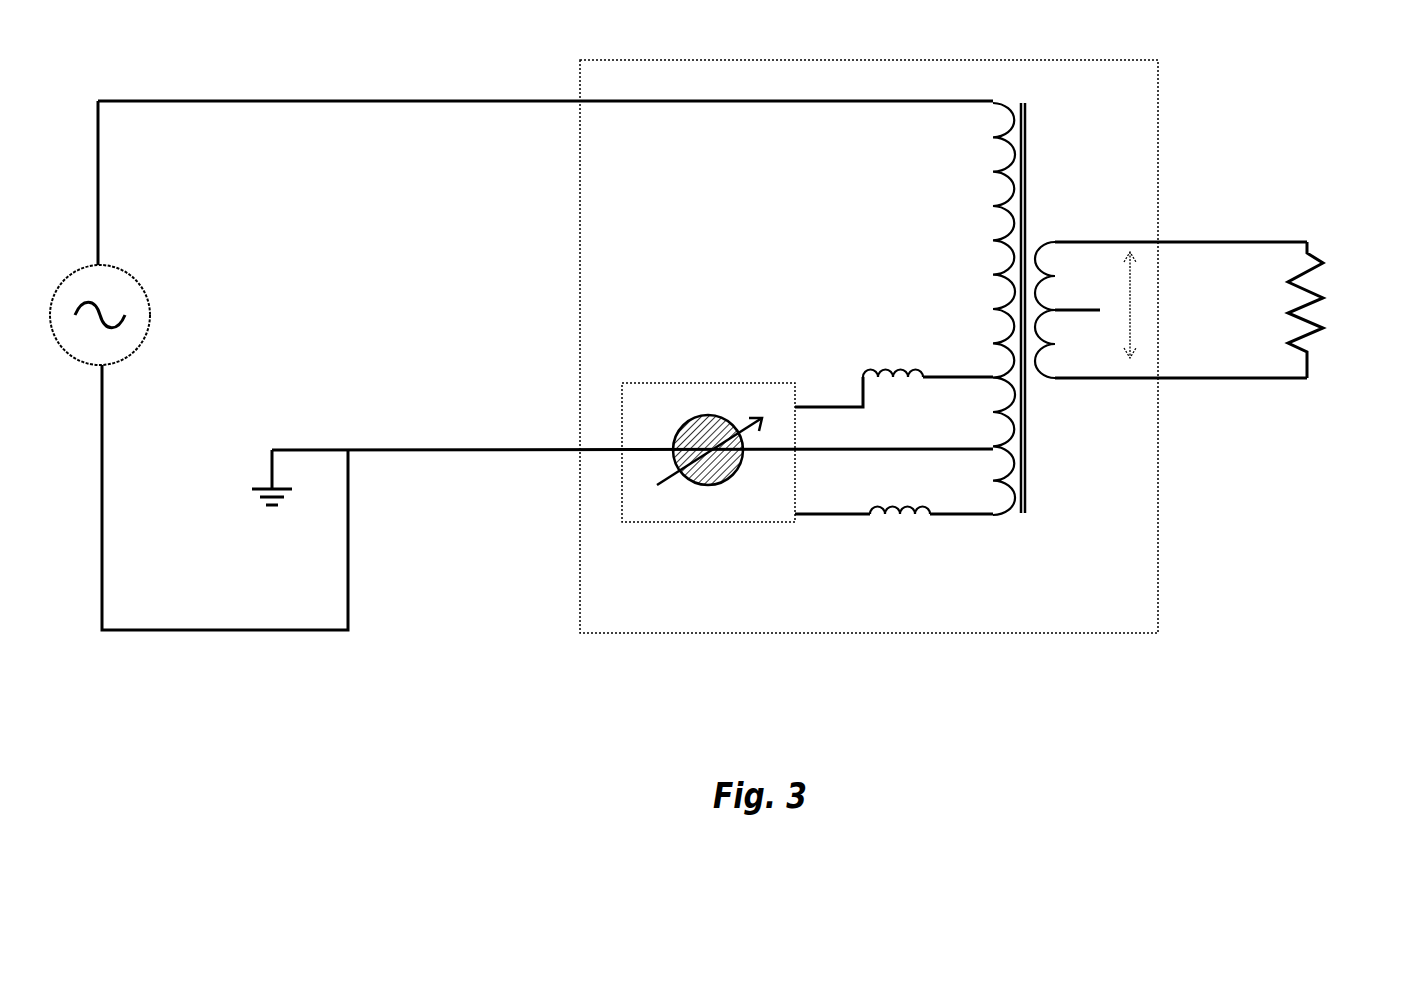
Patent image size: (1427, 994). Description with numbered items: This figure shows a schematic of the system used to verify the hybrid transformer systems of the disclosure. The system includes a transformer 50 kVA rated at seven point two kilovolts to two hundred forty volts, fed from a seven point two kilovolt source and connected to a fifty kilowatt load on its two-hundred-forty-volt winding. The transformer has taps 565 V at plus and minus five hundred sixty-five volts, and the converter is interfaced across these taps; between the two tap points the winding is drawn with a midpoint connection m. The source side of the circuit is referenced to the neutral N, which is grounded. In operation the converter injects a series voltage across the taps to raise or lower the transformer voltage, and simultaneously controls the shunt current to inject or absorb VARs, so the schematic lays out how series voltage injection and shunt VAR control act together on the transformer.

The neutral ground connection N is at (614, 477).
The taps 565 V is at (915, 329).
The midpoint tap m is at (986, 433).
The transformer 50 kVA is at (1353, 310).